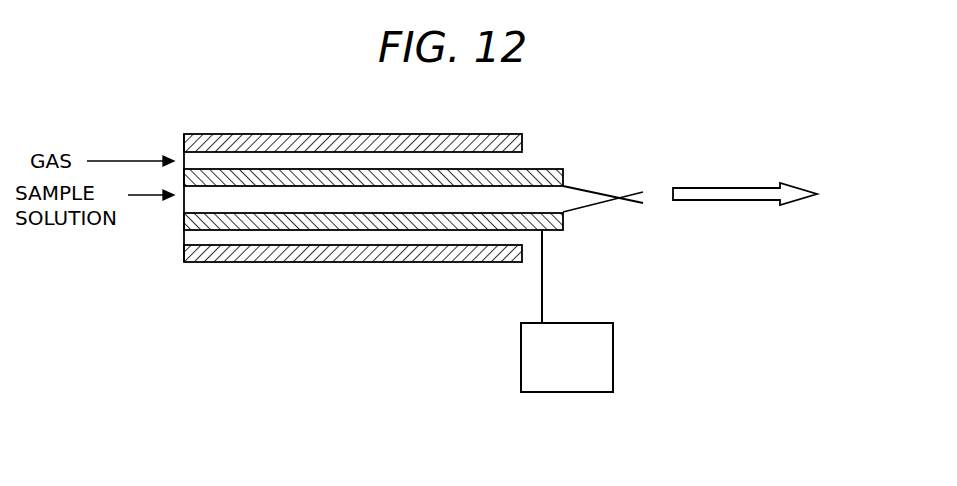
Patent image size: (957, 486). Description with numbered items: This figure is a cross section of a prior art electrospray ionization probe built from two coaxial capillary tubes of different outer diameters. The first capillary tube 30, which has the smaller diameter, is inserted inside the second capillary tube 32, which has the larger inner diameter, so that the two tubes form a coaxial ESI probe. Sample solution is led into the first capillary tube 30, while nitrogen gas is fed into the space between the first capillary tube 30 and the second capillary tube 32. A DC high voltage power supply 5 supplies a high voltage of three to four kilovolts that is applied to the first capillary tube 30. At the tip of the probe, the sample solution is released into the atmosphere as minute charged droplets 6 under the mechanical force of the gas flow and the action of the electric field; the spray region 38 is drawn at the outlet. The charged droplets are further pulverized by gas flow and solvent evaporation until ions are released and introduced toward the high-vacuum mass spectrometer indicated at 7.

The second capillary tube 32 is at (252, 134).
The first capillary tube 30 is at (542, 168).
The spray (Taylor cone) 38 is at (597, 191).
The charged droplet 6 is at (737, 188).
The mass spectrometer region 7 is at (801, 286).
The DC high voltage power supply 5 is at (585, 392).